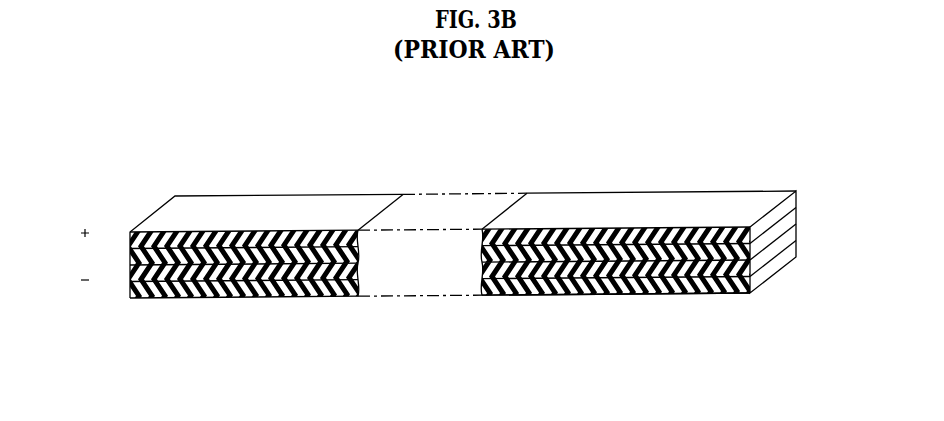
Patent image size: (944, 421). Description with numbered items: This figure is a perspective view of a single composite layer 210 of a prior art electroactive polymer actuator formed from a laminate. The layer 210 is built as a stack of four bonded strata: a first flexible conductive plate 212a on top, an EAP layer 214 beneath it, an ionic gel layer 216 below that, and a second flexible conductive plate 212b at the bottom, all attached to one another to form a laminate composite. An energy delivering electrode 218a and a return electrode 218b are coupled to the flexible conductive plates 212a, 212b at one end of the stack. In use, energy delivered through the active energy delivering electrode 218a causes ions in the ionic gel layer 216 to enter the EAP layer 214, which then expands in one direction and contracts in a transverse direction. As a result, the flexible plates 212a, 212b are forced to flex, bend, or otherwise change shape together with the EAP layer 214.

The layer 210 is at (184, 150).
The first flexible conductive plate 212a is at (695, 200).
The second flexible conductive plate 212b is at (593, 295).
The EAP layer 214 is at (787, 217).
The ionic gel layer 216 is at (787, 237).
The energy delivering electrode 218a is at (130, 242).
The return electrode 218b is at (85, 291).